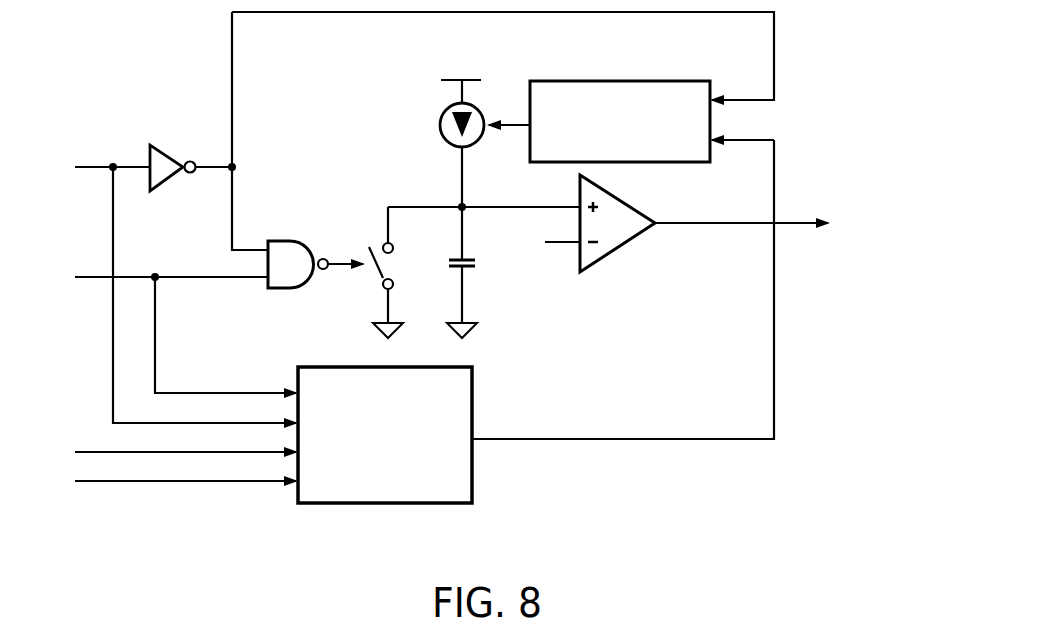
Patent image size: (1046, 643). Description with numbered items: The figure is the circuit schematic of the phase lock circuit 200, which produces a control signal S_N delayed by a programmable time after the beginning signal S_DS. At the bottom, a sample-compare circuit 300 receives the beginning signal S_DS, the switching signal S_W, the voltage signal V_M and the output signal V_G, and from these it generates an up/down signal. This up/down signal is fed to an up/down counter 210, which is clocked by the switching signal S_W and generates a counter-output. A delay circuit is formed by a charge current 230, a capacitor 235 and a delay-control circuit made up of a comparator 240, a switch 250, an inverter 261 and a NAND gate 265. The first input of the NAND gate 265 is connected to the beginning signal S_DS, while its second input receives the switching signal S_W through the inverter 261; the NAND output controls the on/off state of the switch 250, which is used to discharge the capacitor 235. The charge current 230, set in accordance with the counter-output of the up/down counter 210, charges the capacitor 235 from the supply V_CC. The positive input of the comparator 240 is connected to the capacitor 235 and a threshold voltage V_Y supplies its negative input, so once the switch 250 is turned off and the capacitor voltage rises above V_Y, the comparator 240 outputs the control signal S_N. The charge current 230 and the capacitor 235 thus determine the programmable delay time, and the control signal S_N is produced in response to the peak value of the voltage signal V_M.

The phase lock circuit 200 is at (866, 21).
The up/down counter 210 is at (620, 80).
The charge current 230 is at (438, 125).
The capacitor 235 is at (478, 263).
The comparator 240 is at (615, 250).
The switch 250 is at (380, 243).
The inverter 261 is at (165, 150).
The NAND gate 265 is at (290, 292).
The sample-compare circuit 300 is at (475, 485).